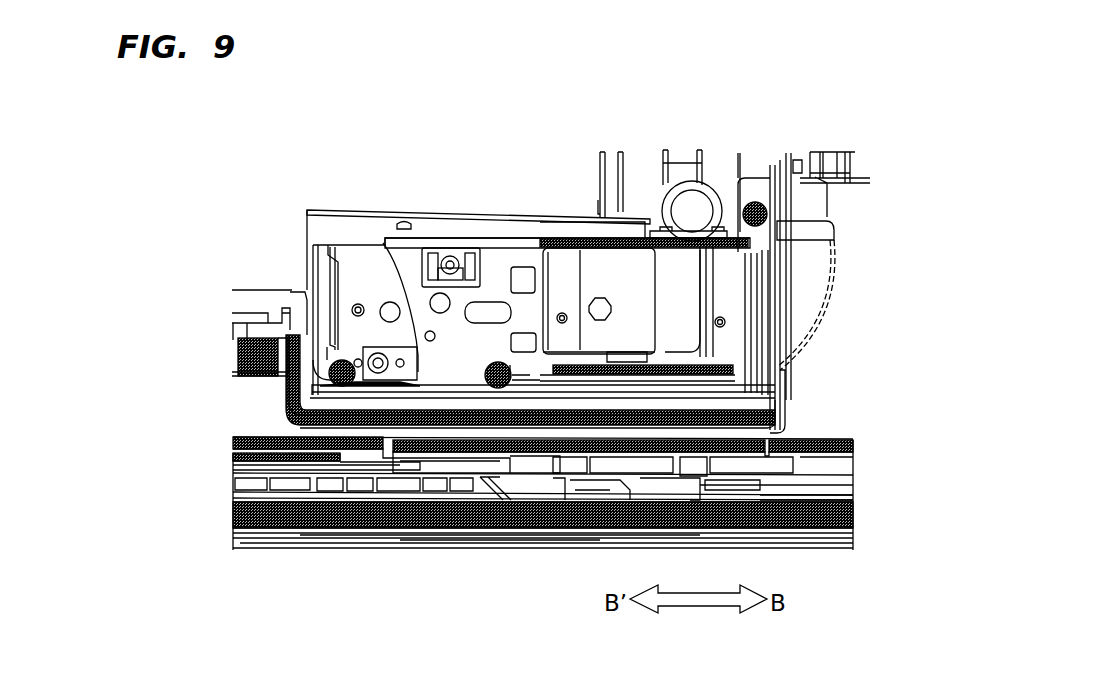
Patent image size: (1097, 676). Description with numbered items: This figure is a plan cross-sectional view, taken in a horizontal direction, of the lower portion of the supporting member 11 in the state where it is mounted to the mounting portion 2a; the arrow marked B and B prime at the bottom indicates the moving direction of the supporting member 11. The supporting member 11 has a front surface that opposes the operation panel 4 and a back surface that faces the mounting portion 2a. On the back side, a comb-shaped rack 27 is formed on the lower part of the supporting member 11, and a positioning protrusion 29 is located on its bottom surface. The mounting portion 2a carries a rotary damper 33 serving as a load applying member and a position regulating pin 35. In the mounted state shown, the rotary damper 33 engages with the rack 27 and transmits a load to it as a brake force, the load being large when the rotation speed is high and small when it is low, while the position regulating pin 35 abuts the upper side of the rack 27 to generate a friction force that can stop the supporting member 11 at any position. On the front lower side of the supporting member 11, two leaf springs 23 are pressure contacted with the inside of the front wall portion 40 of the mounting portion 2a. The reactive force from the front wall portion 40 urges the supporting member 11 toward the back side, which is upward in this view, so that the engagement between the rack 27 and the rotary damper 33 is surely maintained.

The mounting portion 2a is at (577, 219).
The operation panel 4 is at (384, 547).
The supporting member 11 is at (312, 278).
The leaf springs 23 is at (410, 300).
The rack 27 is at (528, 233).
The positioning protrusion 29 is at (450, 262).
The rotary damper 33 is at (696, 205).
The position regulating pin 35 is at (767, 214).
The front wall portion 40 is at (770, 388).